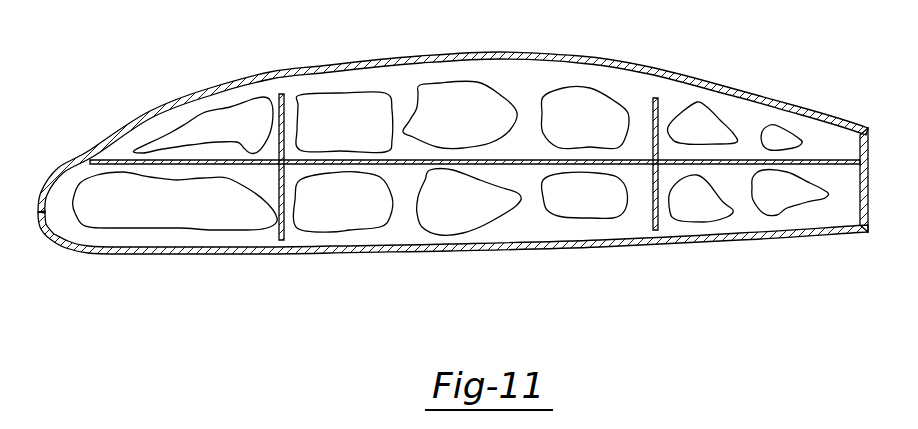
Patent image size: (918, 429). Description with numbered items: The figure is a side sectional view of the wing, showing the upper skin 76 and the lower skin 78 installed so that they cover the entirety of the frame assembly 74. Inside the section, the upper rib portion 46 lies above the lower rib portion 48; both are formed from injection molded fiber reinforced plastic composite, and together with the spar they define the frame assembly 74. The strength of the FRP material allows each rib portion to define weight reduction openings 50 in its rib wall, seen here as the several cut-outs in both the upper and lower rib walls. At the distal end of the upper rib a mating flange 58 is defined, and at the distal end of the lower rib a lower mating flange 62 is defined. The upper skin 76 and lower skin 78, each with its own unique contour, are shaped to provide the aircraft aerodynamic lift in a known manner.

The upper rib portion 46 is at (403, 90).
The upper wing skin 76 is at (563, 58).
The mating flange 58 is at (175, 117).
The weight reduction openings 50 is at (197, 209).
The lower wing skin 78 is at (327, 258).
The frame assembly 74 is at (531, 165).
The lower mating flange 62 is at (598, 243).
The lower rib portion 48 is at (751, 222).